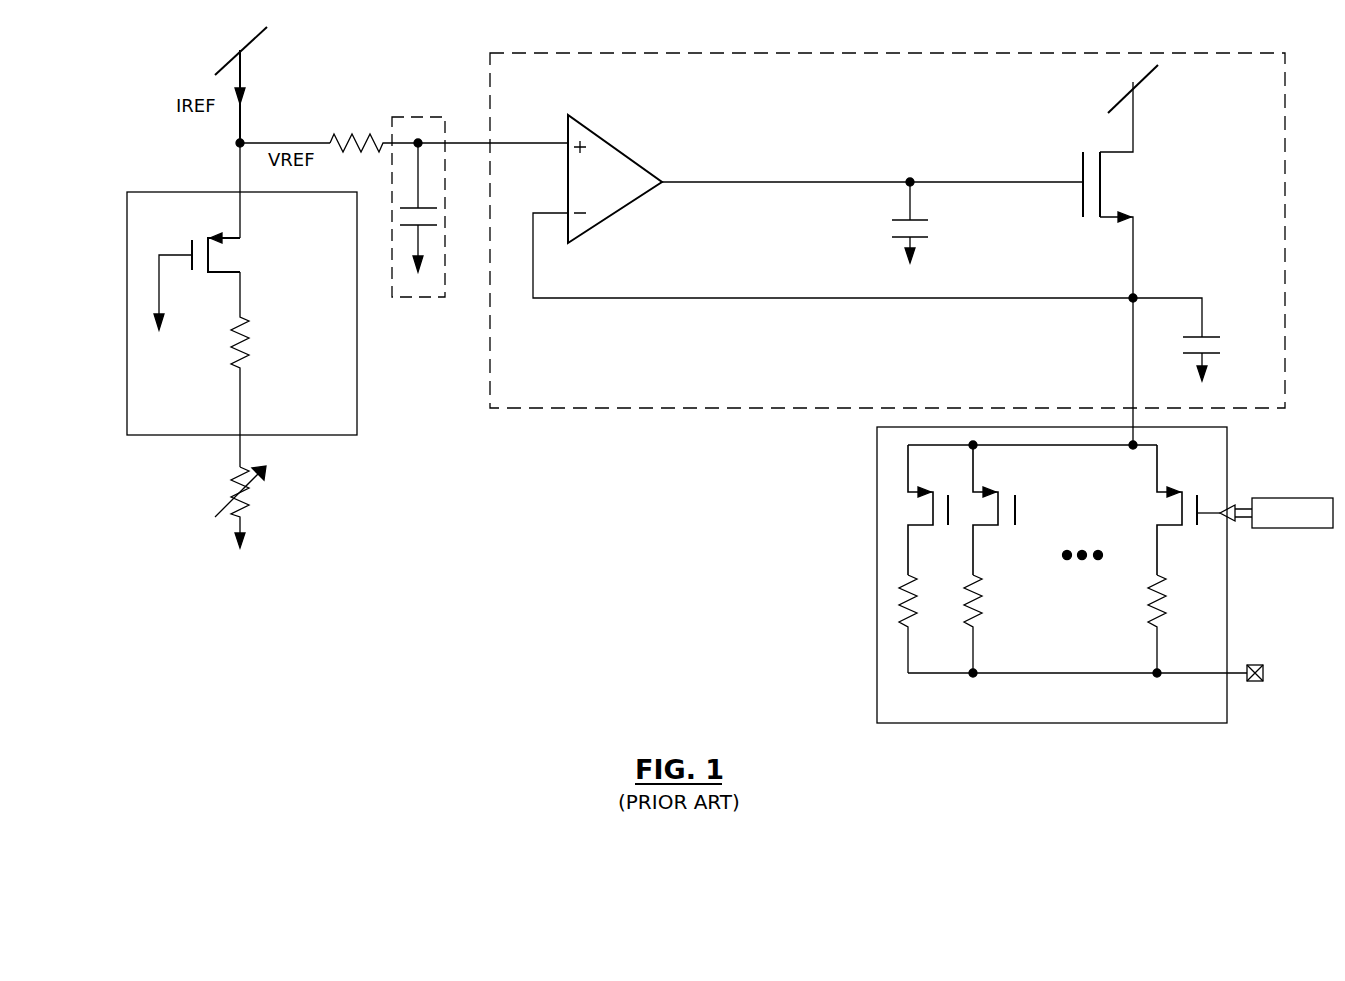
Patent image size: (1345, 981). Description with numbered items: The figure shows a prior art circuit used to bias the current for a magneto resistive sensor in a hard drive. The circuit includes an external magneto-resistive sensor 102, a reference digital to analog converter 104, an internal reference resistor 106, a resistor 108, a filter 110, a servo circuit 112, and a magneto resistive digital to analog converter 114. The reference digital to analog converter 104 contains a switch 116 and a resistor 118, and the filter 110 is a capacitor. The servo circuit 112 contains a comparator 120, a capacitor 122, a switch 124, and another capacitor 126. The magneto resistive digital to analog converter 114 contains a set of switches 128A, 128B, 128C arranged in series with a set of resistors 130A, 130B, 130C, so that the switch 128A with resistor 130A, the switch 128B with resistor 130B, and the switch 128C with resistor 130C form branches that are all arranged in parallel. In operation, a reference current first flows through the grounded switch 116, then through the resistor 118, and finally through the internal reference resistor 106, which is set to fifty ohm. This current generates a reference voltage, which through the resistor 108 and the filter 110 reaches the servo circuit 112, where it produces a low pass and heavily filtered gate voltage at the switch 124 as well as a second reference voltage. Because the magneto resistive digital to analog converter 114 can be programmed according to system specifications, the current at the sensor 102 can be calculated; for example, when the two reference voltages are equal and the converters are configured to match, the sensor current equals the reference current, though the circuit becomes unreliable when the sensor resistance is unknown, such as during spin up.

The external magneto-resistive sensor 102 is at (1256, 683).
The reference digital to analog converter 104 is at (196, 192).
The internal reference resistor 106 is at (245, 506).
The resistor 108 is at (353, 140).
The filter 110 is at (430, 297).
The servo circuit 112 is at (635, 408).
The magneto resistive digital to analog converter 114 is at (1092, 723).
The switch 116 is at (229, 237).
The resistor 118 is at (247, 341).
The comparator 120 is at (619, 148).
The capacitor 122 is at (913, 201).
The switch M2 124 is at (1113, 150).
The capacitor 126 is at (1206, 318).
The switch 128A is at (921, 528).
The switch 128B is at (986, 528).
The switch 128C is at (1170, 528).
The resistor 130A is at (913, 615).
The resistor 130B is at (978, 615).
The resistor 130C is at (1150, 614).